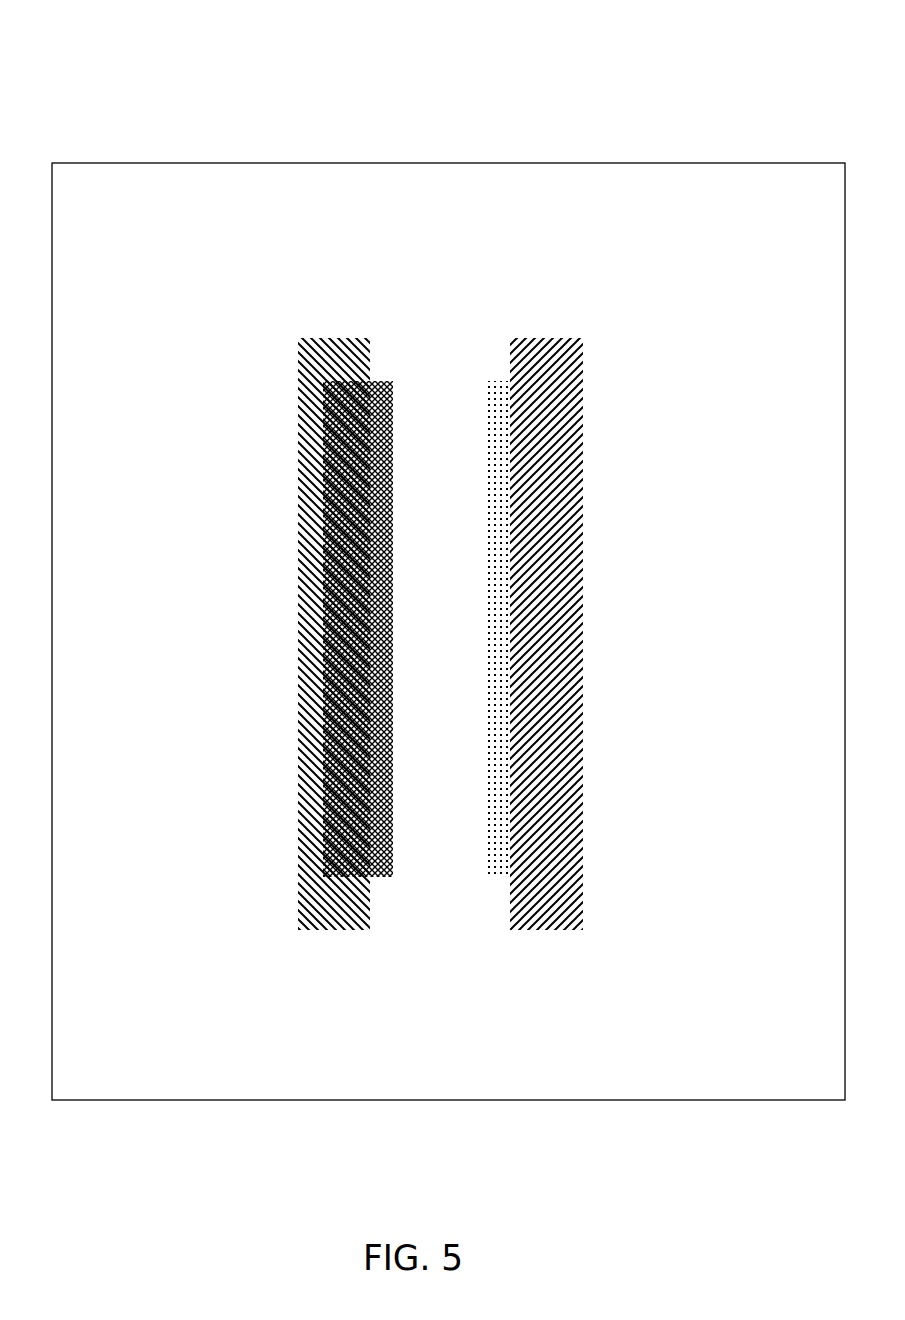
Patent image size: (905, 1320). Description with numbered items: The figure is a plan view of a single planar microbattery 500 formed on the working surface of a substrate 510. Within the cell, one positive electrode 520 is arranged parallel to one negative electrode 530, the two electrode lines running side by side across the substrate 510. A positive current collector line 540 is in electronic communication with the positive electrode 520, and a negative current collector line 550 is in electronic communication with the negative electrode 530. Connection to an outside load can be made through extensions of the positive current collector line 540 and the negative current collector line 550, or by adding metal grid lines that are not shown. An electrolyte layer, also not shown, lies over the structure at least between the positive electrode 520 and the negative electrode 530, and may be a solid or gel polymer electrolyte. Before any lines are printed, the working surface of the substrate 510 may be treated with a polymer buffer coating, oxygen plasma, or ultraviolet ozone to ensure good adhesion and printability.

The planar microbattery 500 is at (207, 143).
The substrate 510 is at (818, 1077).
The positive electrode 520 is at (382, 396).
The negative electrode 530 is at (493, 396).
The positive current collector line 540 is at (317, 910).
The negative current collector line 550 is at (560, 910).